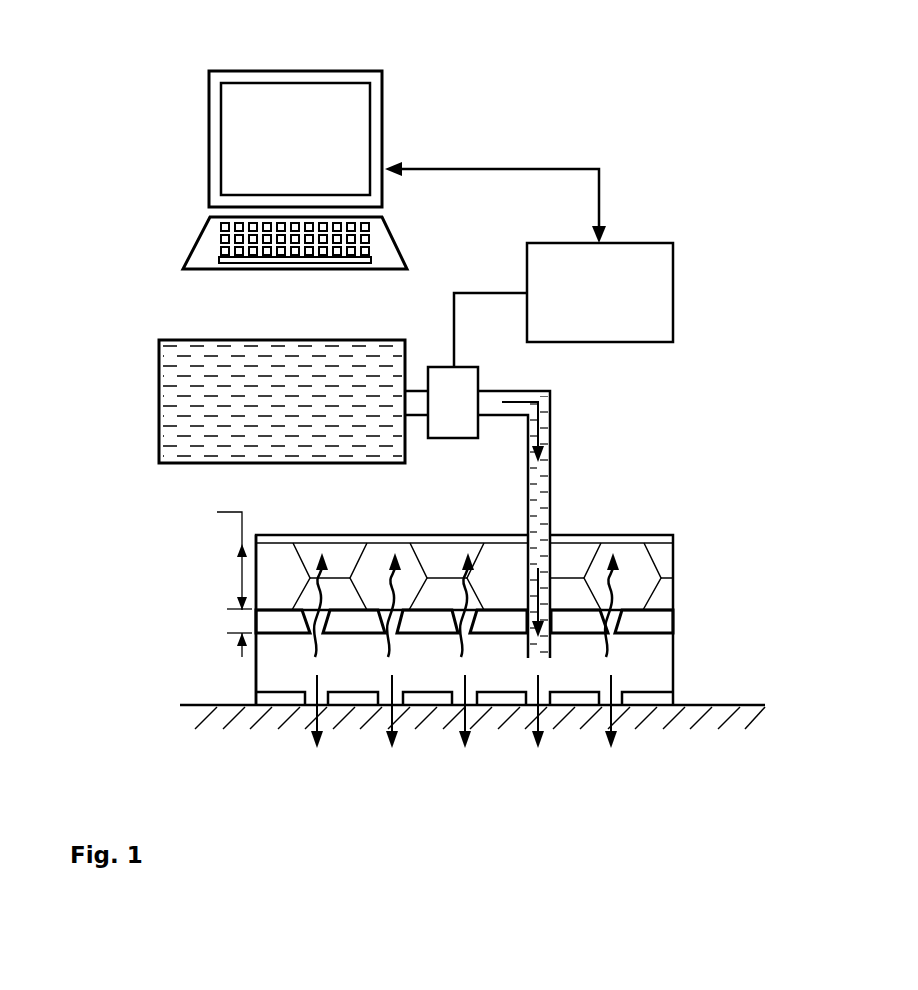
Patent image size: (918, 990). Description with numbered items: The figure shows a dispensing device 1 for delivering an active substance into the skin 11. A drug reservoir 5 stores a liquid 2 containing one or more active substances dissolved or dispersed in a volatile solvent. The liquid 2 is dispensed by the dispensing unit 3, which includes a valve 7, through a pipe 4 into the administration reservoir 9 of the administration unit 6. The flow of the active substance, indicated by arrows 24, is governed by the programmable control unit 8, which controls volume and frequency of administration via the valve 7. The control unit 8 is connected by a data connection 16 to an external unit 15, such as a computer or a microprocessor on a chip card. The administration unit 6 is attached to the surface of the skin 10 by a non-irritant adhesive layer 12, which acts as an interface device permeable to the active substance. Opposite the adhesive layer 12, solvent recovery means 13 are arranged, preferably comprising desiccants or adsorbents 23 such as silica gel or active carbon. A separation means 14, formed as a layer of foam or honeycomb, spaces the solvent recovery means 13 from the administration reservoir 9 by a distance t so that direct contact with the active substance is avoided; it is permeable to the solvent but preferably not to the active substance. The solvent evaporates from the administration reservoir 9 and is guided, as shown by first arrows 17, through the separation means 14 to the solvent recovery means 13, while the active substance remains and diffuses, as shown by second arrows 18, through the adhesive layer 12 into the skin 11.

The dispensing device 1 is at (718, 54).
The liquid 2 is at (241, 401).
The dispensing unit 3 is at (110, 297).
The pipe 4 is at (618, 524).
The drug reservoir 5 is at (254, 396).
The administration unit 6 is at (507, 590).
The valve 7 is at (593, 396).
The control unit 8 is at (606, 250).
The administration reservoir 9 is at (376, 645).
The surface of the skin 10 is at (474, 664).
The skin 11 is at (417, 737).
The adhesive layer 12 is at (371, 676).
The solvent recovery means 13 is at (163, 603).
The separation means 14 is at (498, 615).
The external unit 15 is at (238, 170).
The data connection 16 is at (577, 166).
The first arrows 17 is at (541, 591).
The second arrows 18 is at (540, 733).
The desiccants 23 is at (371, 555).
The arrows 24 is at (650, 532).